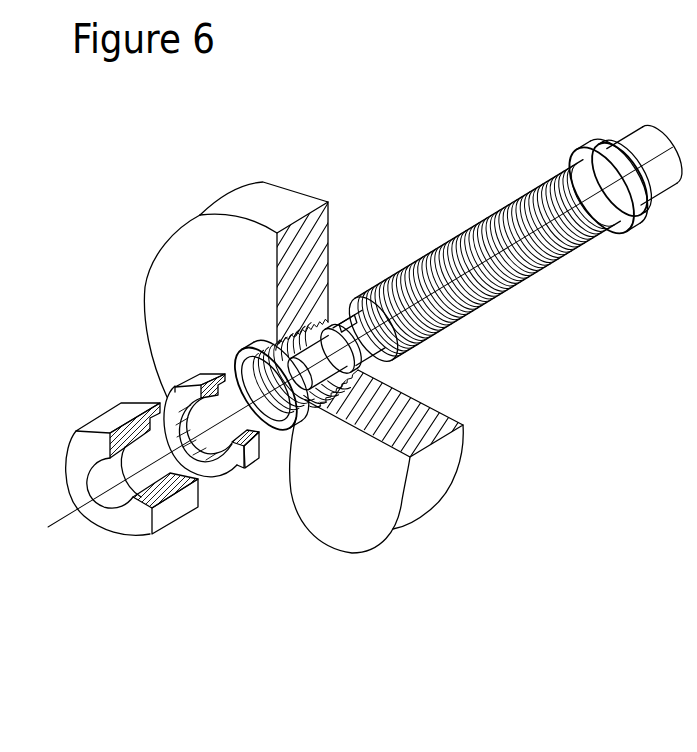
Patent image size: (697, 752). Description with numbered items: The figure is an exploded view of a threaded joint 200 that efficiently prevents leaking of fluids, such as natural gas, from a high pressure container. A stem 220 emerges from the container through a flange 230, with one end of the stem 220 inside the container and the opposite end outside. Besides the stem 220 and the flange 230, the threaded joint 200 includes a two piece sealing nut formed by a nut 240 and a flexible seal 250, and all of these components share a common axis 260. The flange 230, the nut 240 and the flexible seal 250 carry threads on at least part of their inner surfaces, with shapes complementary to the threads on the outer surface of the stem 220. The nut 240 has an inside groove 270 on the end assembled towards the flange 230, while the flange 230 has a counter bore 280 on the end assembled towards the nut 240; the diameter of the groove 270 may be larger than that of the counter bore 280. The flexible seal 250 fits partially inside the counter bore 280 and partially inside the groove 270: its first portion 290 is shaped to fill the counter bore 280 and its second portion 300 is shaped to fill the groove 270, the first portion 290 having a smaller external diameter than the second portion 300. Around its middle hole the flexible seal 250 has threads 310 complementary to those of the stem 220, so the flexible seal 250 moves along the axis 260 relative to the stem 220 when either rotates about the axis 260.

The threaded joint 200 is at (145, 183).
The stem 220 is at (420, 257).
The flange 230 is at (185, 260).
The nut 240 is at (110, 413).
The flexible seal 250 is at (203, 380).
The common axis 260 is at (67, 510).
The inside groove 270 is at (196, 486).
The counter bore 280 is at (283, 420).
The first portion 290 is at (259, 460).
The second portion 300 is at (242, 470).
The threads 310 is at (177, 394).